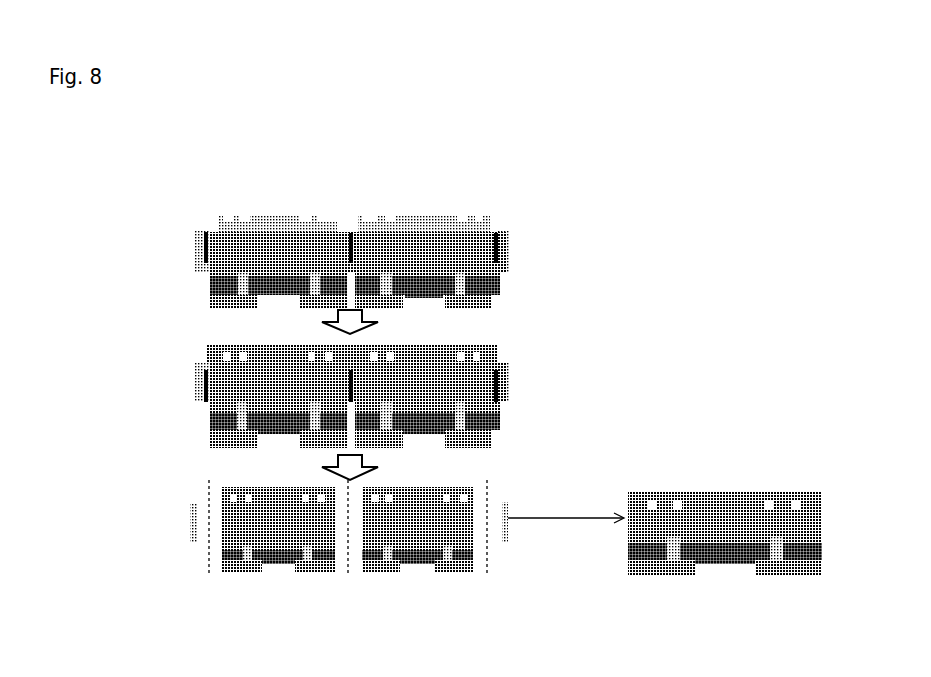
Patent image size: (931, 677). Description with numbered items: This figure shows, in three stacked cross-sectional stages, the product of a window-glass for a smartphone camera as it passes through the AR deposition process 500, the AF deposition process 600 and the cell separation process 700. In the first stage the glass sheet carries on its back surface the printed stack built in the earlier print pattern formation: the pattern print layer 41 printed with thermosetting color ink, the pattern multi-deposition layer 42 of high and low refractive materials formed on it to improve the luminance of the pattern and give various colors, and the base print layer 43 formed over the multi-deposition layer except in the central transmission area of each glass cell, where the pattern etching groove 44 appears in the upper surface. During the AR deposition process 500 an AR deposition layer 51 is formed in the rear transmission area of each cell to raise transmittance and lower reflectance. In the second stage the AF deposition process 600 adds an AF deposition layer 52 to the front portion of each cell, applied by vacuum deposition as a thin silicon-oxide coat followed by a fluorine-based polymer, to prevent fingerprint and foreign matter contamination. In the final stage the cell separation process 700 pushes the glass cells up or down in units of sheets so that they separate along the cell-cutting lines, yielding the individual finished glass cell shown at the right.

The AR deposition process 500 is at (188, 247).
The AF deposition process 600 is at (188, 389).
The cell separation process 700 is at (186, 527).
The pattern etching groove 44 is at (458, 223).
The pattern print layer 41 is at (497, 285).
The pattern multi-deposition layer 42 is at (492, 293).
The base print layer 43 is at (492, 307).
The AR deposition layer 51 is at (427, 298).
The AF deposition layer 52 is at (287, 350).